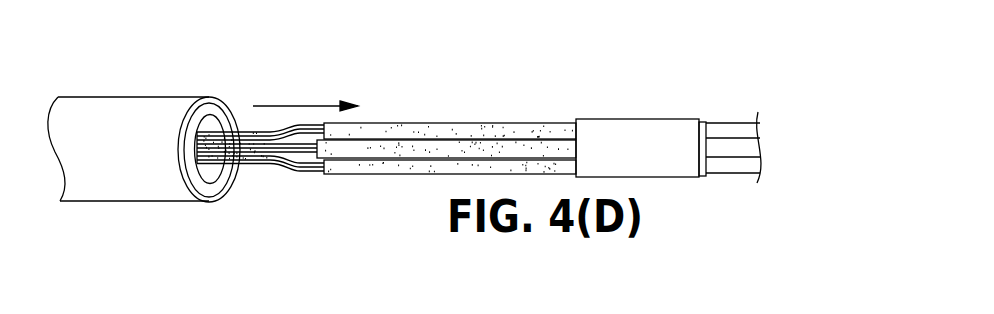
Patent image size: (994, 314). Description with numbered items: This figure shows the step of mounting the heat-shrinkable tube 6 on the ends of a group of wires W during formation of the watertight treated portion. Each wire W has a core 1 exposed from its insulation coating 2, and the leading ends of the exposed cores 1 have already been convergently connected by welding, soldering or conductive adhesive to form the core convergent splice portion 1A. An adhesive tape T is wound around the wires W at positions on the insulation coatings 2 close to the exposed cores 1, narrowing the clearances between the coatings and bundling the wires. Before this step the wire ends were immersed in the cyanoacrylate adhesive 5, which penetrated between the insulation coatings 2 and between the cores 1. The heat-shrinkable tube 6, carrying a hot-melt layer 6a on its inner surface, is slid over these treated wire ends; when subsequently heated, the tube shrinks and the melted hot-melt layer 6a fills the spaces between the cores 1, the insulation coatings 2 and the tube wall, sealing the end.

The heat-shrinkable tube 6 is at (167, 97).
The hot-melt layer 6a is at (216, 109).
The core 1 is at (295, 165).
The core convergent splice portion 1A is at (213, 152).
The cyanoacrylate adhesive 5 is at (380, 127).
The insulation coating 2 is at (458, 127).
The wire W is at (543, 122).
The adhesive tape T is at (628, 130).